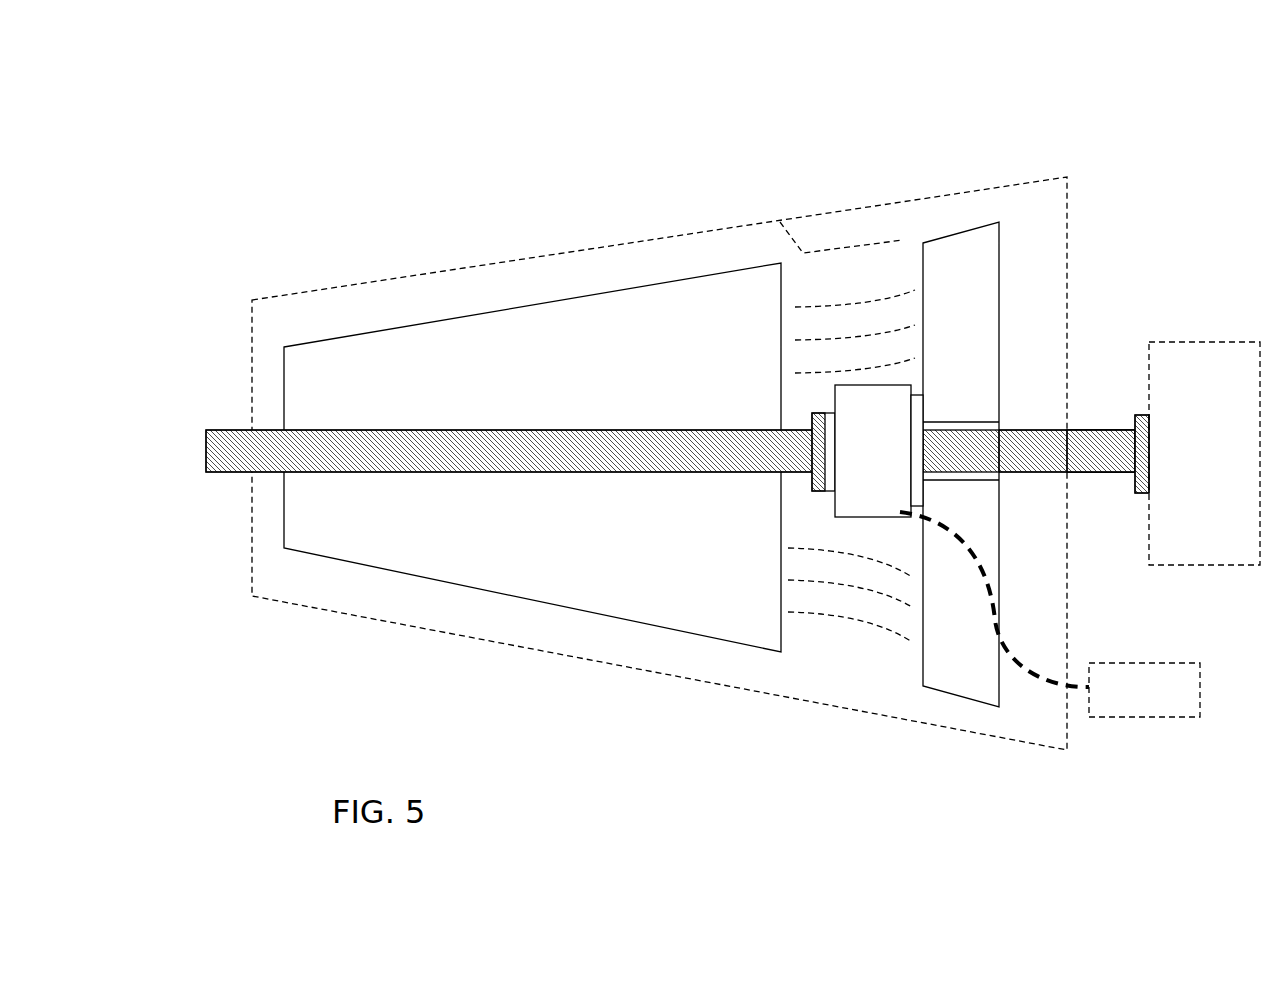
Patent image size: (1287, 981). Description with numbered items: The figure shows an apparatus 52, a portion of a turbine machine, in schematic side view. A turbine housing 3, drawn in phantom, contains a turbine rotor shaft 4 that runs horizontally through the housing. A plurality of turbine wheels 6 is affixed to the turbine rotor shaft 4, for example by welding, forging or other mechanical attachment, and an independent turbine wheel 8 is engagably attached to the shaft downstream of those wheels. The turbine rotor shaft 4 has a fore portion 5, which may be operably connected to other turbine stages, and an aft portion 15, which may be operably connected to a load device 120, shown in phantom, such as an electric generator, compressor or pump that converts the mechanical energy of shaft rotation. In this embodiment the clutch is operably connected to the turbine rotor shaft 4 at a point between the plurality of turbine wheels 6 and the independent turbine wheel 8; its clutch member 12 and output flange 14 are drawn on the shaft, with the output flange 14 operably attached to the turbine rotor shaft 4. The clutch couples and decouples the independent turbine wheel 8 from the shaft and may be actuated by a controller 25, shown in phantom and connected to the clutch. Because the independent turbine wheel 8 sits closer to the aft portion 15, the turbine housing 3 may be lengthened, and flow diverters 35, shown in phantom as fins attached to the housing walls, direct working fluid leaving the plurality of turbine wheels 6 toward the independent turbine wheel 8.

The apparatus 52 is at (670, 415).
The turbine housing 3 is at (663, 237).
The flow diverters 35 is at (870, 233).
The independent turbine wheel 8 is at (970, 255).
The turbine rotor shaft 4 is at (1115, 435).
The fore portion 5 is at (208, 405).
The plurality of turbine wheels 6 is at (592, 375).
The clutch member 12 is at (849, 463).
The output flange 14 is at (810, 480).
The aft portion 15 is at (1090, 500).
The load device 120 is at (1228, 465).
The controller 25 is at (1164, 705).